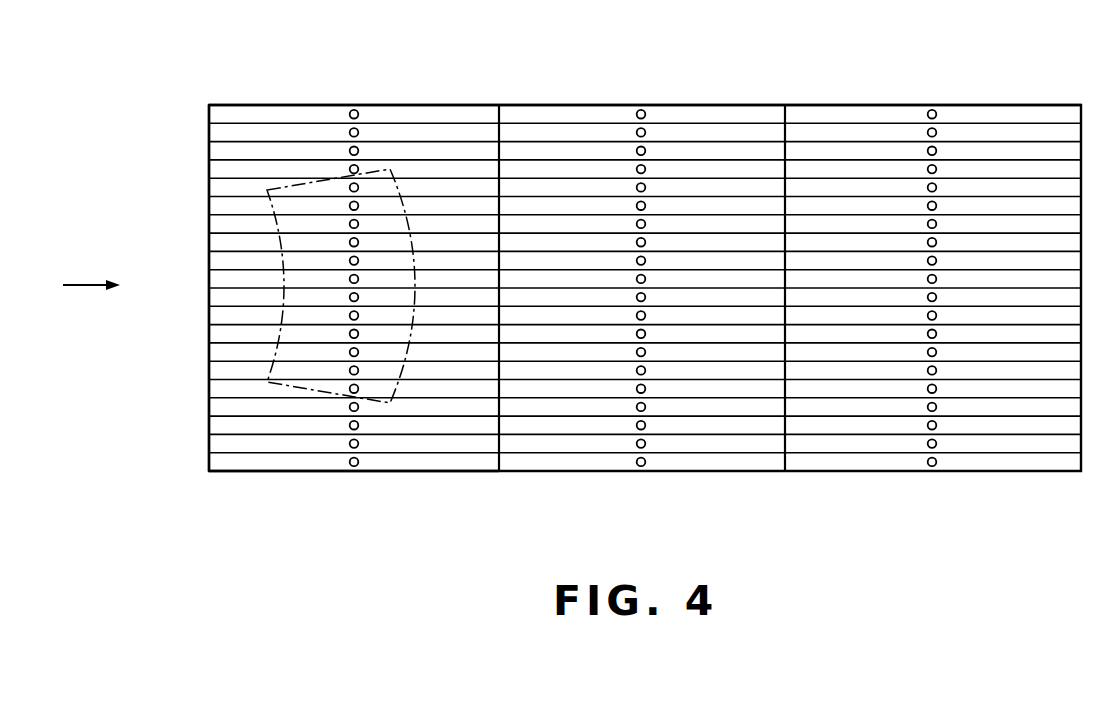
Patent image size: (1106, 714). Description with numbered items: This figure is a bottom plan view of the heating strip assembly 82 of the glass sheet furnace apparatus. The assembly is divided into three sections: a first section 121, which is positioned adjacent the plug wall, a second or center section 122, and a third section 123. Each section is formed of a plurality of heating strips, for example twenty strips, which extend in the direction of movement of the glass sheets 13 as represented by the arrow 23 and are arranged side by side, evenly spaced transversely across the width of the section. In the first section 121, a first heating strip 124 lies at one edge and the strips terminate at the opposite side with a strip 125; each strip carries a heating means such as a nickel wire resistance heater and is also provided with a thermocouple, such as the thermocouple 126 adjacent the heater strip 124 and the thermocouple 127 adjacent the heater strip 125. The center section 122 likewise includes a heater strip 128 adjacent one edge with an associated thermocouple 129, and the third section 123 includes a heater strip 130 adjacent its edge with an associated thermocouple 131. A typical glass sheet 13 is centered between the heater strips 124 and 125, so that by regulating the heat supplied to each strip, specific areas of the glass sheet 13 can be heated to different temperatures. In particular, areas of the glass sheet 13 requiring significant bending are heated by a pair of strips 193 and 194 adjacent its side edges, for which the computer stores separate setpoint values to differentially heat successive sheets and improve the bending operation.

The heating strip assembly 82 is at (712, 53).
The first section 121 is at (424, 99).
The second or center section 122 is at (734, 99).
The third section 123 is at (1026, 97).
The first heating strip 124 is at (250, 112).
The strip 125 is at (478, 466).
The thermocouple 126 is at (353, 110).
The thermocouple 127 is at (358, 466).
The heater strip 128 is at (548, 112).
The thermocouple 129 is at (641, 112).
The heater strip 130 is at (852, 113).
The thermocouple 131 is at (934, 113).
The heater strip 193 is at (216, 203).
The heater strip 194 is at (225, 371).
The glass sheet 13 is at (283, 294).
The arrow 23 is at (80, 285).